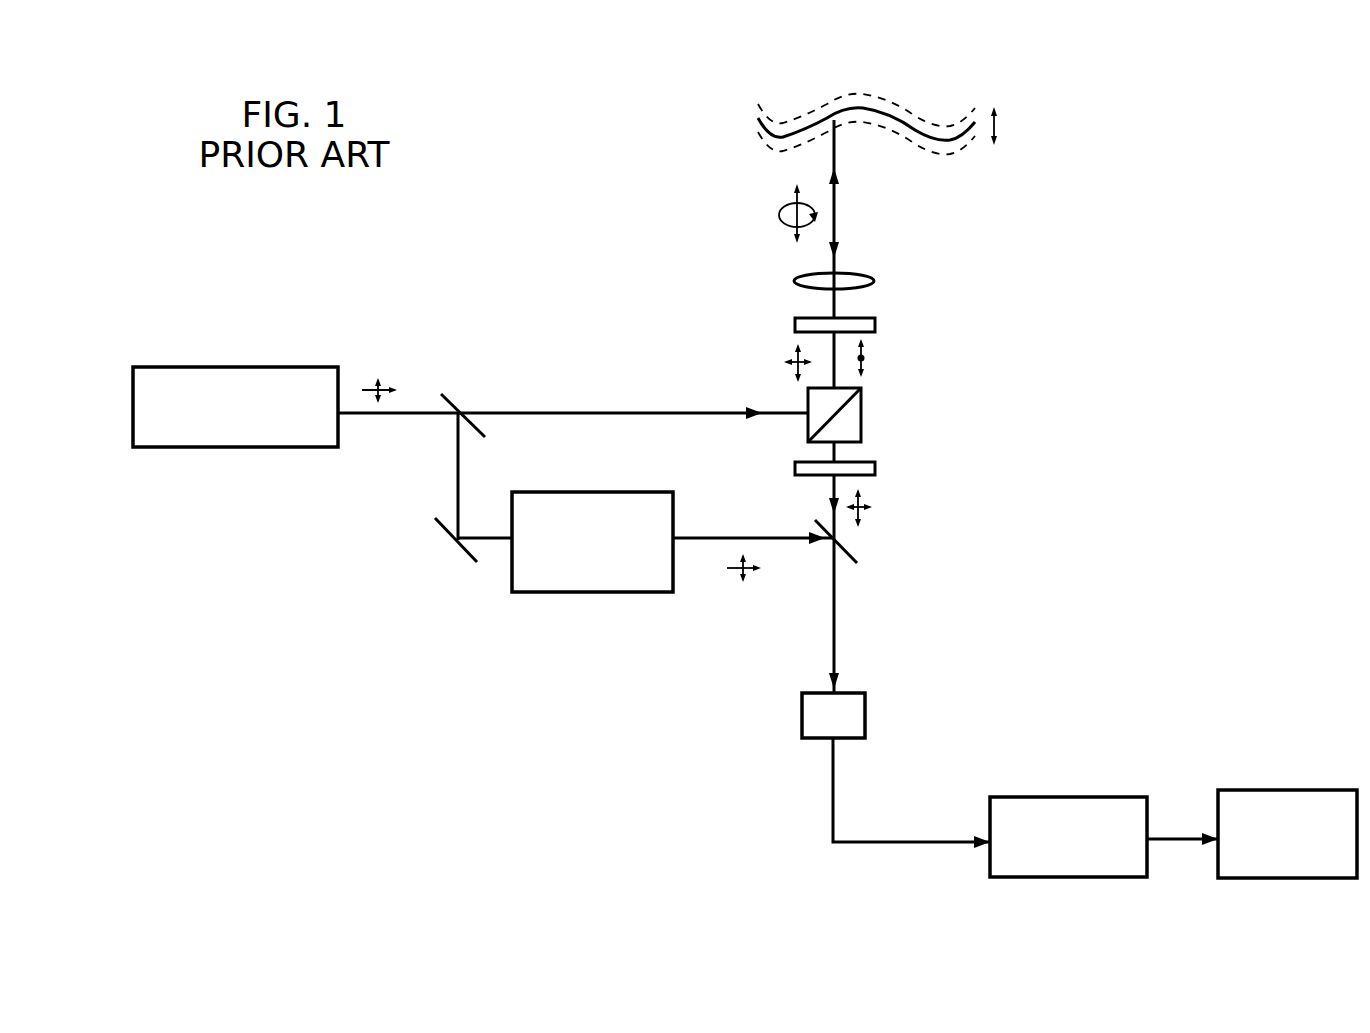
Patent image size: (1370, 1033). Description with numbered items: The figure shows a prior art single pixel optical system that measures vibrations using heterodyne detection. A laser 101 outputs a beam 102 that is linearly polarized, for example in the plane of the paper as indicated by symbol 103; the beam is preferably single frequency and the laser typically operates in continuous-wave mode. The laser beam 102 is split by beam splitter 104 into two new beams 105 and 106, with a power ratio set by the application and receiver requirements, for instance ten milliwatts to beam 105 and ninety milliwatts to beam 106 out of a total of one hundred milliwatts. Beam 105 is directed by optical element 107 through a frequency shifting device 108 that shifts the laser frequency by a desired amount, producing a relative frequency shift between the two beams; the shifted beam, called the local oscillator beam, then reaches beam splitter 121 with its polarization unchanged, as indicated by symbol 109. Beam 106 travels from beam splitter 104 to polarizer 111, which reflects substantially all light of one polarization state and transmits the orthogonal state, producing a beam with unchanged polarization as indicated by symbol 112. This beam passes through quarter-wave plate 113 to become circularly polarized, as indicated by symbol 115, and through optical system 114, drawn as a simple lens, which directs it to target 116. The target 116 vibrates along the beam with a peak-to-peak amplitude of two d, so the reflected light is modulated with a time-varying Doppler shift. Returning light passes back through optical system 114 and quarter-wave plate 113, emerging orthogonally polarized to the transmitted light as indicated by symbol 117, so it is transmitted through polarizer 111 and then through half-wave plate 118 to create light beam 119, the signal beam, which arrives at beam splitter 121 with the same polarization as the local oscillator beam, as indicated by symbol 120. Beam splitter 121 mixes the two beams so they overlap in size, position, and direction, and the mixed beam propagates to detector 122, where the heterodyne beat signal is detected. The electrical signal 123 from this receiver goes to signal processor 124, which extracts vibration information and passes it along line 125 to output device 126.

The laser 101 is at (227, 365).
The beam 102 is at (402, 418).
The symbol 103 is at (394, 372).
The beam splitter 104 is at (468, 385).
The beam 105 is at (455, 492).
The beam 106 is at (513, 412).
The optical element 107 is at (435, 530).
The frequency shifting device 108 is at (555, 593).
The symbol 109 is at (734, 585).
The polarizer 111 is at (862, 407).
The symbol 112 is at (772, 360).
The quarter-wave plate 113 is at (876, 325).
The optical system 114 is at (795, 278).
The symbol 115 is at (770, 209).
The target 116 is at (815, 122).
The symbol 117 is at (876, 366).
The half-wave plate 118 is at (877, 469).
The light beam 119 is at (827, 487).
The symbol 120 is at (880, 496).
The beam splitter 121 is at (858, 556).
The detector 122 is at (800, 718).
The electrical signal 123 is at (828, 805).
The signal processor 124 is at (1068, 877).
The line 125 is at (1180, 841).
The output device 126 is at (1272, 878).